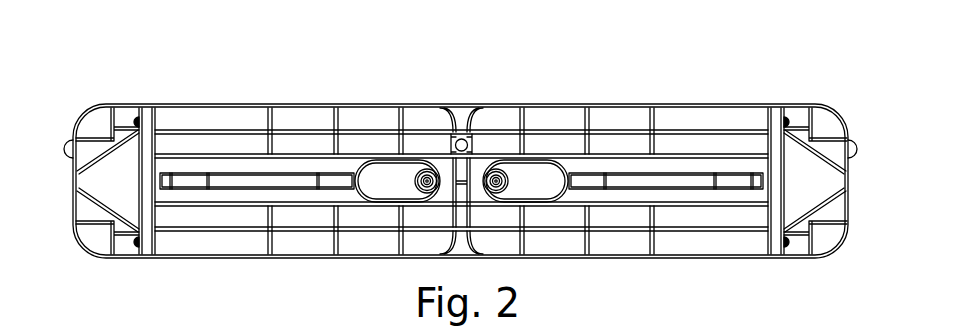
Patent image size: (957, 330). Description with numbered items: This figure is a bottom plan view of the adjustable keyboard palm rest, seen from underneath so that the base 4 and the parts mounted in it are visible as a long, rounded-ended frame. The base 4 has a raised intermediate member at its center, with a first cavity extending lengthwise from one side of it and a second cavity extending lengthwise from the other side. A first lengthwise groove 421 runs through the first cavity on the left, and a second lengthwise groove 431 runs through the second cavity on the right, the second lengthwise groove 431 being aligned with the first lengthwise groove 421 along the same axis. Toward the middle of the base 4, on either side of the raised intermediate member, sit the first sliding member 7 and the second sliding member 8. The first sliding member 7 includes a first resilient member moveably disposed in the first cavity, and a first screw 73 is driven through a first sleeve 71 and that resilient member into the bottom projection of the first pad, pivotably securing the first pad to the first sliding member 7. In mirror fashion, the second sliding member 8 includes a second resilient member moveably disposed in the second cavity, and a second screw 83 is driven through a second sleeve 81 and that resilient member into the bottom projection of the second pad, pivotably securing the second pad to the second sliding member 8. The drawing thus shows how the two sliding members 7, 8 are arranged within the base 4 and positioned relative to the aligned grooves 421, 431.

The base 4 is at (615, 122).
The first lengthwise groove 421 is at (234, 180).
The second lengthwise groove 431 is at (672, 180).
The first sliding member 7 is at (410, 124).
The first sleeve 71 is at (437, 165).
The first screw 73 is at (426, 174).
The second sliding member 8 is at (530, 125).
The second sleeve 81 is at (495, 165).
The second screw 83 is at (501, 168).